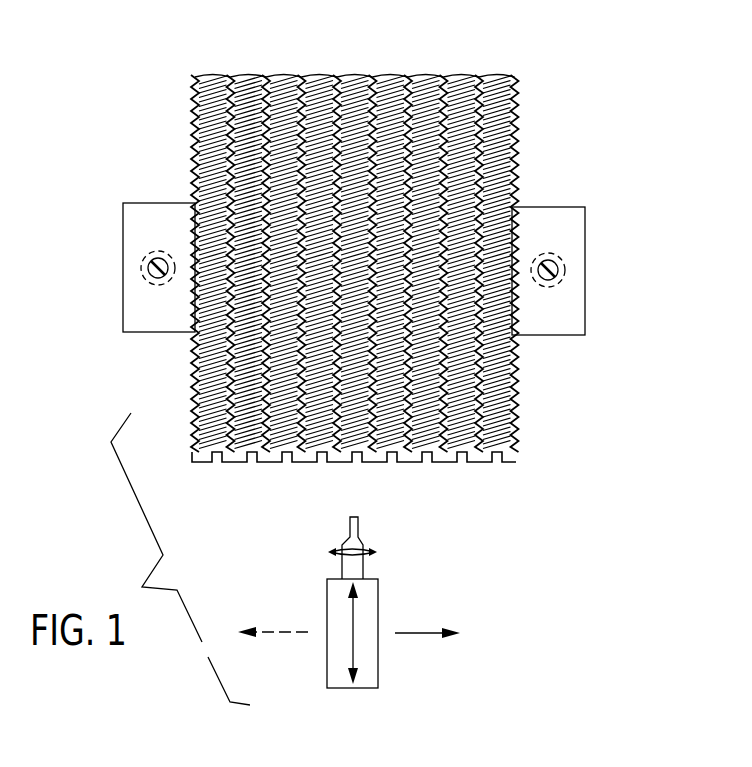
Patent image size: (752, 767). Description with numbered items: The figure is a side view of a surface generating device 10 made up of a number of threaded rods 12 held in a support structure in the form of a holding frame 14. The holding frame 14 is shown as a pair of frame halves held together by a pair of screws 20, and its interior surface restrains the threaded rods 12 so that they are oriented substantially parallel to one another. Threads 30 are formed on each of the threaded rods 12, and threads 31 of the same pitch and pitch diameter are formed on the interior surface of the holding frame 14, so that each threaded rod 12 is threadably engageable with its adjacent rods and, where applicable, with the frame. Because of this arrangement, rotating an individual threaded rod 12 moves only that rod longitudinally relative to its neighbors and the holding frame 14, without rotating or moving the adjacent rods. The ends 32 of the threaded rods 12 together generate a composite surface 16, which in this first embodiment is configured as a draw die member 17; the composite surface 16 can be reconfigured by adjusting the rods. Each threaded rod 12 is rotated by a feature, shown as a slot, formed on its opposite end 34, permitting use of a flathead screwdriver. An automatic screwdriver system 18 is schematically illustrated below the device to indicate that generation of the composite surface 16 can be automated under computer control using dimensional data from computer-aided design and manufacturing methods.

The surface generating device 10 is at (148, 160).
The threaded rods 12 is at (328, 462).
The holding frame 14 is at (135, 303).
The composite surface 16 is at (488, 62).
The draw die member 17 is at (248, 48).
The automatic screwdriver system 18 is at (378, 607).
The screws 20 is at (150, 262).
The threads 30 is at (512, 410).
The threads 31 is at (505, 228).
The ends 32 is at (460, 75).
The end 34 is at (355, 464).